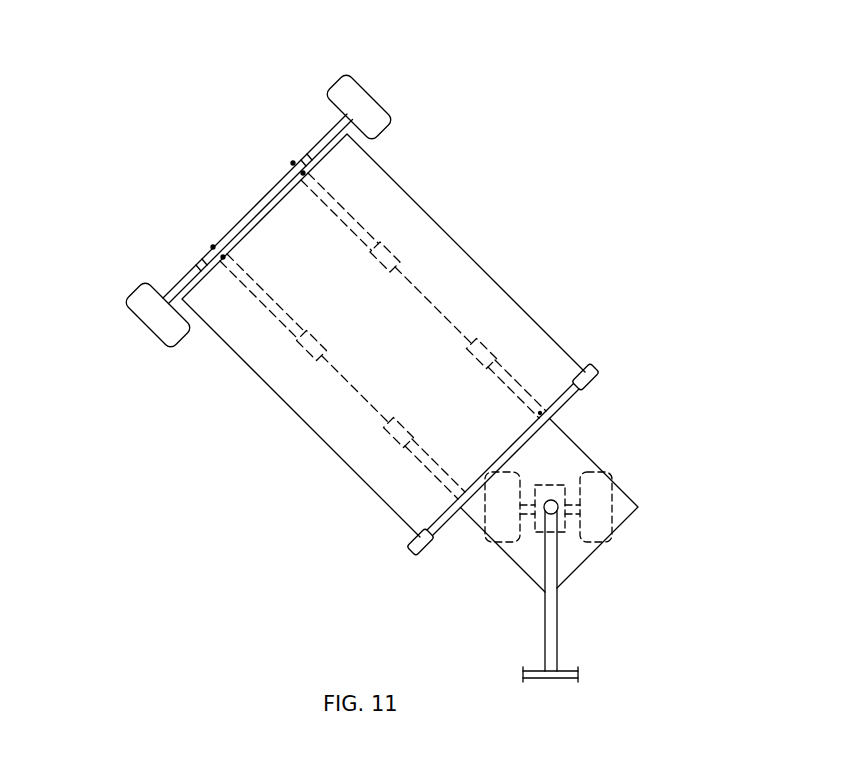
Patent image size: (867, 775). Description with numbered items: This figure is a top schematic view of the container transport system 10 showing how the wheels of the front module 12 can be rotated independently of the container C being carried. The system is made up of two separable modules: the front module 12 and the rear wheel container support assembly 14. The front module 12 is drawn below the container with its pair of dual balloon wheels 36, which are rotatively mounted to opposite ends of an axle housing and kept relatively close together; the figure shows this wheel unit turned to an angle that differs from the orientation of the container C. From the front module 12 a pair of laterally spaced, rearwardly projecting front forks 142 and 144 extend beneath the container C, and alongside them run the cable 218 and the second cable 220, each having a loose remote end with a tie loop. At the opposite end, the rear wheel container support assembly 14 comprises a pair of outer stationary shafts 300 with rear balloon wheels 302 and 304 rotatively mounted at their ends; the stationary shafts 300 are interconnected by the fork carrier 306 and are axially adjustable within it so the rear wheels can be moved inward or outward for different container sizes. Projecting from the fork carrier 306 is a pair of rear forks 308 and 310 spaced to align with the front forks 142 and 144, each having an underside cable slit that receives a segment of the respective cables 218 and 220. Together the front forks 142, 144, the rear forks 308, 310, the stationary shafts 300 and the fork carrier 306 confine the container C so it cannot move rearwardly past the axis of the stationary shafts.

The container transport system 10 is at (583, 143).
The front module 12 is at (663, 498).
The rear wheel container support assembly 14 is at (188, 100).
The balloon wheels 36 is at (510, 475).
The front fork 142 is at (497, 353).
The front fork 144 is at (410, 447).
The cable 218 is at (422, 290).
The second cable 220 is at (338, 380).
The stationary shafts 300 is at (327, 135).
The rear balloon wheel 302 is at (377, 117).
The rear balloon wheel 304 is at (162, 327).
The fork carrier 306 is at (260, 208).
The rear fork 308 is at (370, 237).
The rear fork 310 is at (263, 305).
The container C is at (558, 368).